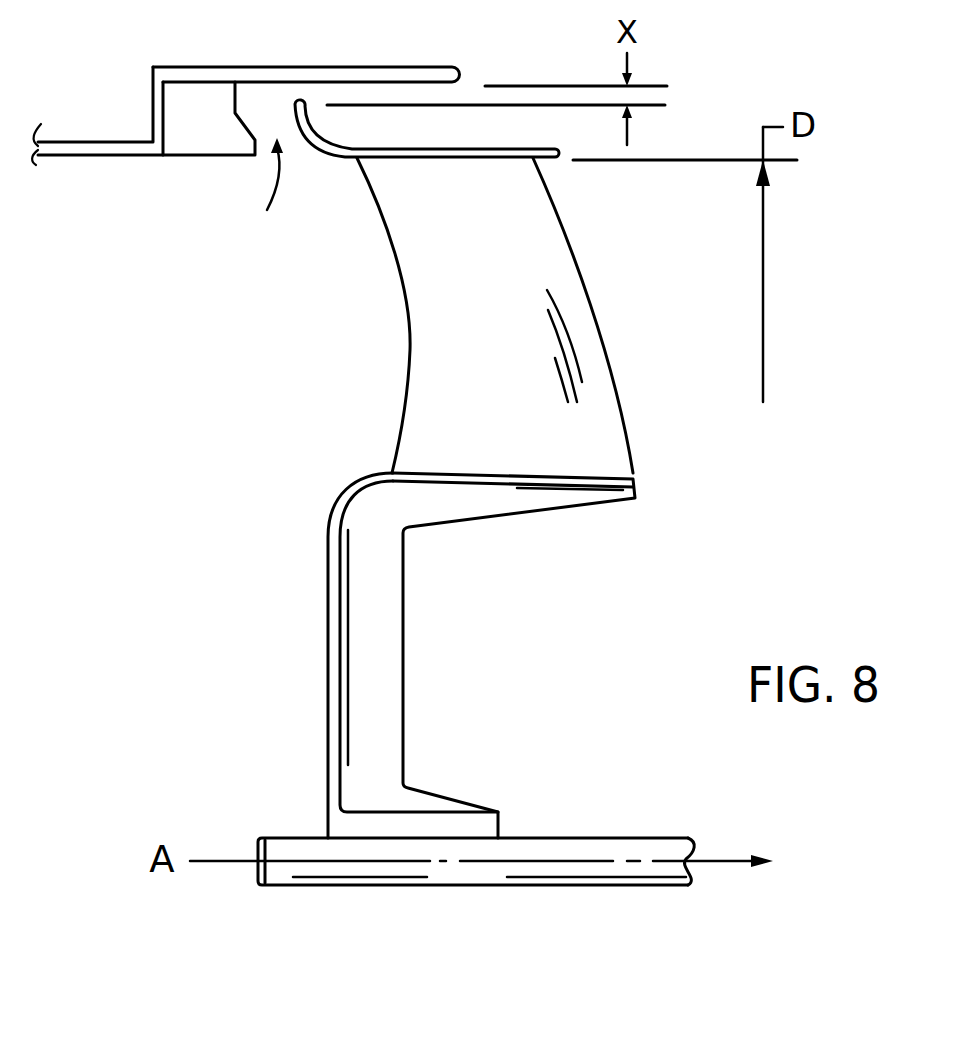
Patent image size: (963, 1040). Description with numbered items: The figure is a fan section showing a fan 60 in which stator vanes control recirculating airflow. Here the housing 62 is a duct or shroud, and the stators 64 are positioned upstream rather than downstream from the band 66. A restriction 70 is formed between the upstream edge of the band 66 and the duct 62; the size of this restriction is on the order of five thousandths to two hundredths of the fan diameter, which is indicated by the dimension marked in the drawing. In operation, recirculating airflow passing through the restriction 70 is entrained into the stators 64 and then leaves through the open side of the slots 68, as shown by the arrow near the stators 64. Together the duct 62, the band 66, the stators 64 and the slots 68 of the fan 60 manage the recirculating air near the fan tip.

The fan 60 is at (389, 469).
The housing 62 is at (102, 137).
The stators 64 is at (225, 140).
The band 66 is at (323, 152).
The slots 68 is at (261, 197).
The restriction 70 is at (322, 97).